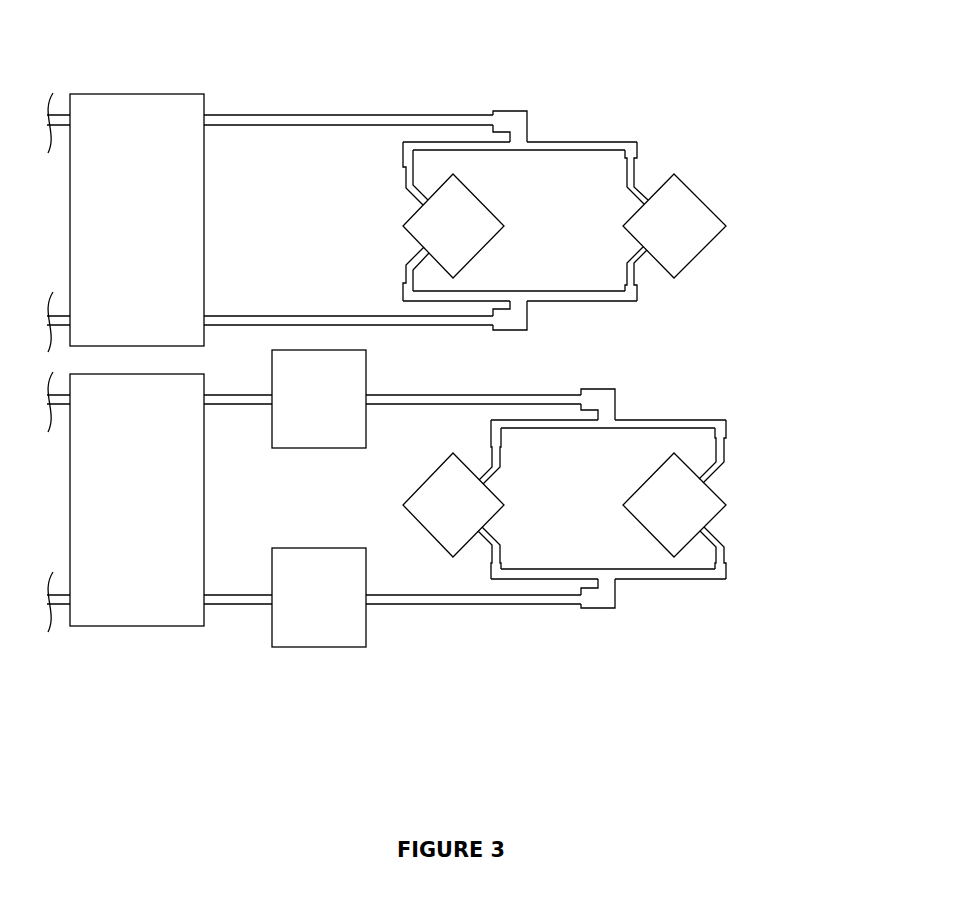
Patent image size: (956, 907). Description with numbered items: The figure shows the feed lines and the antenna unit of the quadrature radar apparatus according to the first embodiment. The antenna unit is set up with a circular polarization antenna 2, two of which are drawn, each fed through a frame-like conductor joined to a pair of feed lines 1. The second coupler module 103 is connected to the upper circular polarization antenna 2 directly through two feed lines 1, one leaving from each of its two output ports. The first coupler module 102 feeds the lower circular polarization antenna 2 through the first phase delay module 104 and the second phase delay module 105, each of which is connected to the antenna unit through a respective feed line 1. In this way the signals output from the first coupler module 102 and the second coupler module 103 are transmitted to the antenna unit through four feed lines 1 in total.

The feed line 1 is at (430, 120).
The circular polarization antenna 2 is at (697, 185).
The first coupler module 102 is at (129, 626).
The second coupler module 103 is at (138, 93).
The first phase delay module 104 is at (317, 647).
The second phase delay module 105 is at (317, 448).